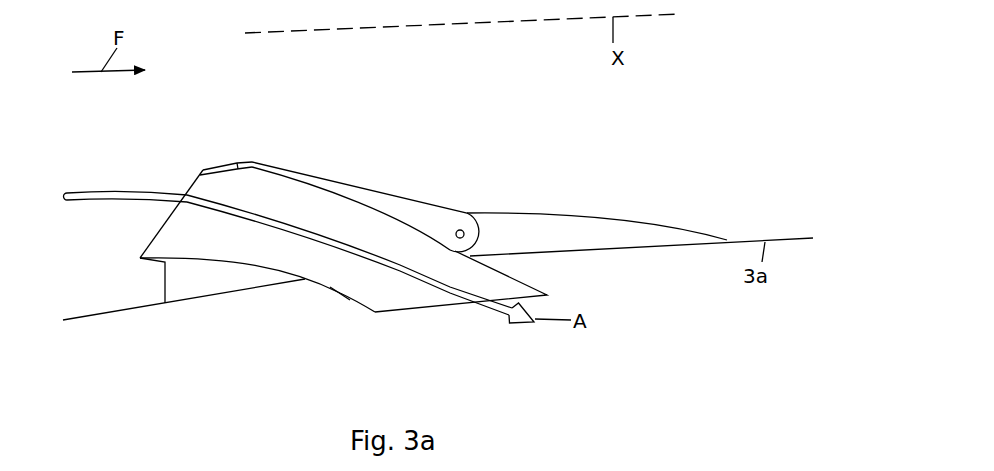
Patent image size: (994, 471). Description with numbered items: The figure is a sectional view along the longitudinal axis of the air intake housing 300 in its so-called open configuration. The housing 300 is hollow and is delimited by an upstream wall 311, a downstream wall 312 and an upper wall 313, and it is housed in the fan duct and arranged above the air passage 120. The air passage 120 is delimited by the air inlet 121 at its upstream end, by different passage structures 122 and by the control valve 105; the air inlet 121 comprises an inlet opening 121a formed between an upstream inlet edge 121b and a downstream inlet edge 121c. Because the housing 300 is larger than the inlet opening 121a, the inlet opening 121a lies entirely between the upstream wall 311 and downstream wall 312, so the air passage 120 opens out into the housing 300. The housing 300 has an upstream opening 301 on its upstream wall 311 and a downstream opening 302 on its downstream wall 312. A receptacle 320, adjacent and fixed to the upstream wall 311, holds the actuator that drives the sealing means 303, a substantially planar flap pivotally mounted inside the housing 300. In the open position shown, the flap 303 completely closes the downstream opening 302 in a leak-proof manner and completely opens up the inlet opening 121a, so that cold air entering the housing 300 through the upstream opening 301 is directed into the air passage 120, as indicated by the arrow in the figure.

The air intake housing 300 is at (212, 125).
The upstream opening 301 is at (182, 182).
The downstream opening 302 is at (452, 196).
The sealing means 303 is at (418, 202).
The upstream wall 311 is at (165, 281).
The downstream wall 312 is at (553, 212).
The upper wall 313 is at (237, 160).
The receptacle 320 is at (190, 286).
The control valve 105 is at (467, 305).
The air passage 120 is at (362, 318).
The air inlet 121 is at (396, 280).
The inlet opening 121a is at (317, 262).
The upstream inlet edge 121b is at (283, 283).
The downstream inlet edge 121c is at (480, 262).
The passage structures 122 is at (340, 295).